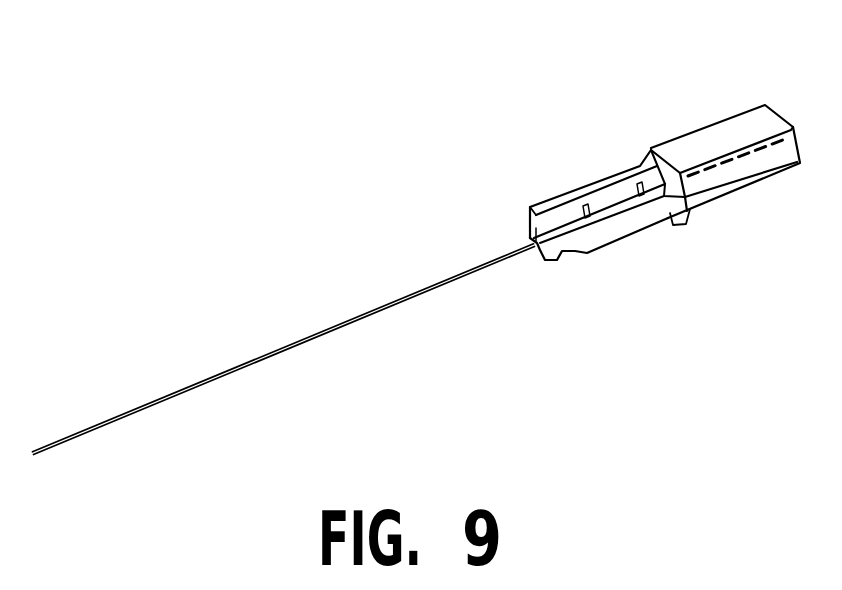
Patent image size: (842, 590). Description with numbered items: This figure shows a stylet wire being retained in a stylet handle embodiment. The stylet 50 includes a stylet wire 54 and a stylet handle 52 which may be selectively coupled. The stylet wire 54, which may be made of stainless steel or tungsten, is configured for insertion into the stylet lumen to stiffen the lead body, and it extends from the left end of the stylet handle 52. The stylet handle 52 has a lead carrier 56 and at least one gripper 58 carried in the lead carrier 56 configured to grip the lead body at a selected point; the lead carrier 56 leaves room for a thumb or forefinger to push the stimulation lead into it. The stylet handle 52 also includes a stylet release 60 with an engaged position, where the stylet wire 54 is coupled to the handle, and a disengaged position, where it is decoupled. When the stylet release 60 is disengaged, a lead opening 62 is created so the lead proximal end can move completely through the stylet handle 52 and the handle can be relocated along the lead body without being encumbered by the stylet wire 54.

The stylet 50 is at (510, 137).
The stylet handle 52 is at (733, 132).
The stylet wire 54 is at (240, 308).
The lead carrier 56 is at (609, 202).
The gripper 58 is at (530, 228).
The stylet release 60 is at (729, 173).
The lead opening 62 is at (651, 150).